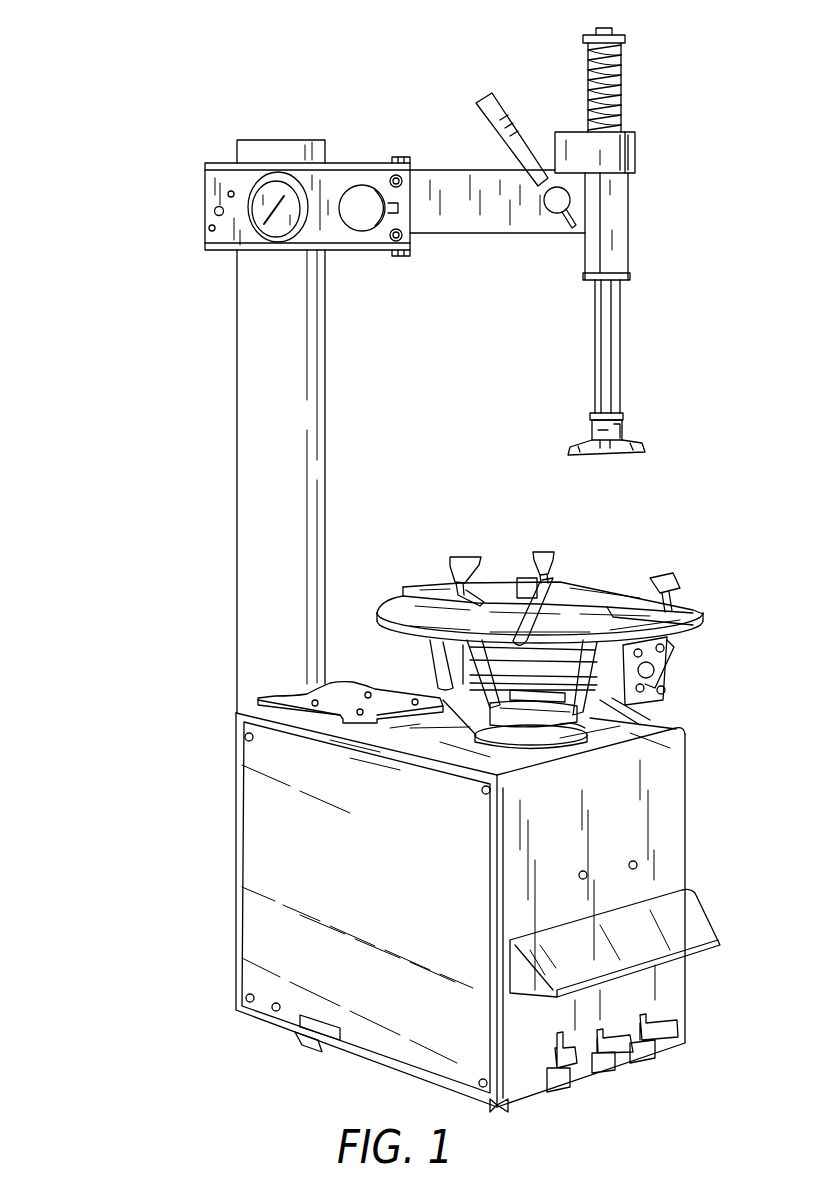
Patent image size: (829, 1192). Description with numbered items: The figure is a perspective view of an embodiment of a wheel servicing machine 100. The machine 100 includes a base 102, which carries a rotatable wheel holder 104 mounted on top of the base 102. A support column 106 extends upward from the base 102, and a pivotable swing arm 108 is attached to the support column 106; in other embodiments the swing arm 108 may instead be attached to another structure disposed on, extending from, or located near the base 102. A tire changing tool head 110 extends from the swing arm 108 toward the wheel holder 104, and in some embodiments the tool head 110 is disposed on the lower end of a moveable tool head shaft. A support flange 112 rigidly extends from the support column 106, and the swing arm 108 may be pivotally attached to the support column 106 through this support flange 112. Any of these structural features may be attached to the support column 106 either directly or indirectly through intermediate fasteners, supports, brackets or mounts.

The wheel servicing machine 100 is at (113, 163).
The base 102 is at (686, 830).
The rotatable wheel holder 104 is at (700, 613).
The support column 106 is at (237, 493).
The swing arm 108 is at (505, 237).
The tire changing tool head 110 is at (623, 432).
The support flange 112 is at (333, 163).